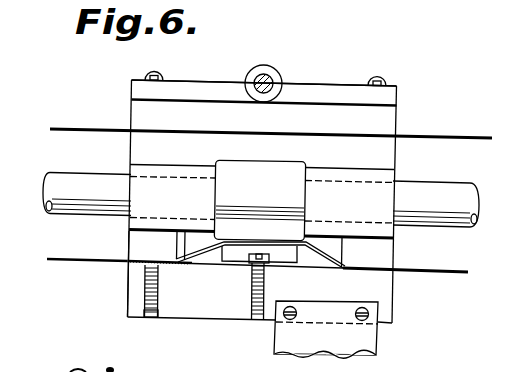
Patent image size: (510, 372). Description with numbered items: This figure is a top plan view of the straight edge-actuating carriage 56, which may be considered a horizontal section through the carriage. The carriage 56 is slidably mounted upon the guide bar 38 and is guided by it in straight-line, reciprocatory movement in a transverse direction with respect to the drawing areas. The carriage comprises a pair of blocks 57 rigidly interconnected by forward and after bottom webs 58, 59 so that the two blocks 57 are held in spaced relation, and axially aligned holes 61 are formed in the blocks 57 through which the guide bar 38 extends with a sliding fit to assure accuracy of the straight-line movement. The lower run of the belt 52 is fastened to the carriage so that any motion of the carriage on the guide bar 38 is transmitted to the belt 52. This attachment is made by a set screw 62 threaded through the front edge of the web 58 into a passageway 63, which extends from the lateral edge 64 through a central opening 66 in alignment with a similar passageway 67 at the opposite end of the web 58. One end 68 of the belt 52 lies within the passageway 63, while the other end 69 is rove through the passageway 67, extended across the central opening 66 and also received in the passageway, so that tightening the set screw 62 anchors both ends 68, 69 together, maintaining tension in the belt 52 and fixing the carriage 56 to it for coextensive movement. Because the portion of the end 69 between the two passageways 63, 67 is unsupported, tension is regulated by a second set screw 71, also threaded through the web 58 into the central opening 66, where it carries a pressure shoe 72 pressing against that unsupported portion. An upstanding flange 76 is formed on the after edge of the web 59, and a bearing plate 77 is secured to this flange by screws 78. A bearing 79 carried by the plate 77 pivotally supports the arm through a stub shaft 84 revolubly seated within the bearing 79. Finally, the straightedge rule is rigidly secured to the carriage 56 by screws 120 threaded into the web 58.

The guide bar 38 is at (455, 183).
The belt 52 is at (450, 137).
The carriage 56 is at (395, 254).
The blocks 57 is at (186, 157).
The forward bottom web 58 is at (164, 317).
The after bottom web 59 is at (138, 151).
The holes 61 is at (180, 178).
The set screw 62 is at (148, 303).
The passageway 63 is at (130, 268).
The lateral edge 64 is at (127, 287).
The central opening 66 is at (203, 266).
The passageway 67 is at (390, 273).
The end of tape 68 is at (117, 260).
The end of tape 69 is at (183, 232).
The second set screw 71 is at (250, 305).
The pressure shoe 72 is at (235, 258).
The upstanding flange 76 is at (388, 125).
The bearing plate 77 is at (390, 98).
The screws 78 is at (162, 77).
The bearing 79 is at (283, 80).
The stub shaft 84 is at (268, 78).
The screws 120 is at (368, 313).